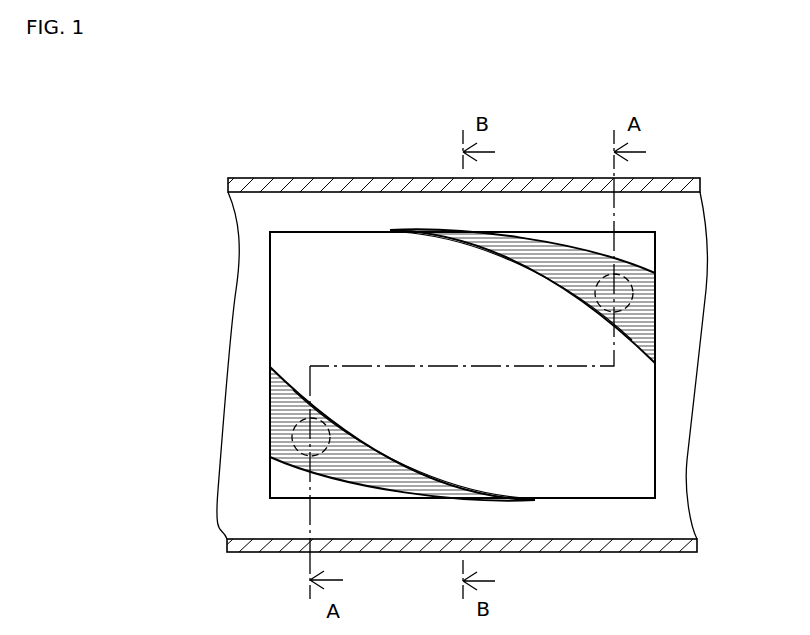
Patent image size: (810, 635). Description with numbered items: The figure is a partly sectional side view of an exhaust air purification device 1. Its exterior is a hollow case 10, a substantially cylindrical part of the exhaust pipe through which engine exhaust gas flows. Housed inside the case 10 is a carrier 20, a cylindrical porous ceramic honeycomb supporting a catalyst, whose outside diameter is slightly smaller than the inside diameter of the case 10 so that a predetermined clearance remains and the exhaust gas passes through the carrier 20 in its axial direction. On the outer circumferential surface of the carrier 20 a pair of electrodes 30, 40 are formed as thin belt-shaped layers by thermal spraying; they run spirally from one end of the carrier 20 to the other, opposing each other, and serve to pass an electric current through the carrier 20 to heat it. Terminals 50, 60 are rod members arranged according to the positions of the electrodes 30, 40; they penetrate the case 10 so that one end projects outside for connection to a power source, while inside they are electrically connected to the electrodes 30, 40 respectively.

The exhaust air purification device 1 is at (457, 344).
The case 10 is at (642, 553).
The carrier 20 is at (287, 283).
The electrode 30 is at (640, 327).
The electrode 40 is at (287, 406).
The terminal 50 is at (633, 292).
The terminal 60 is at (292, 440).